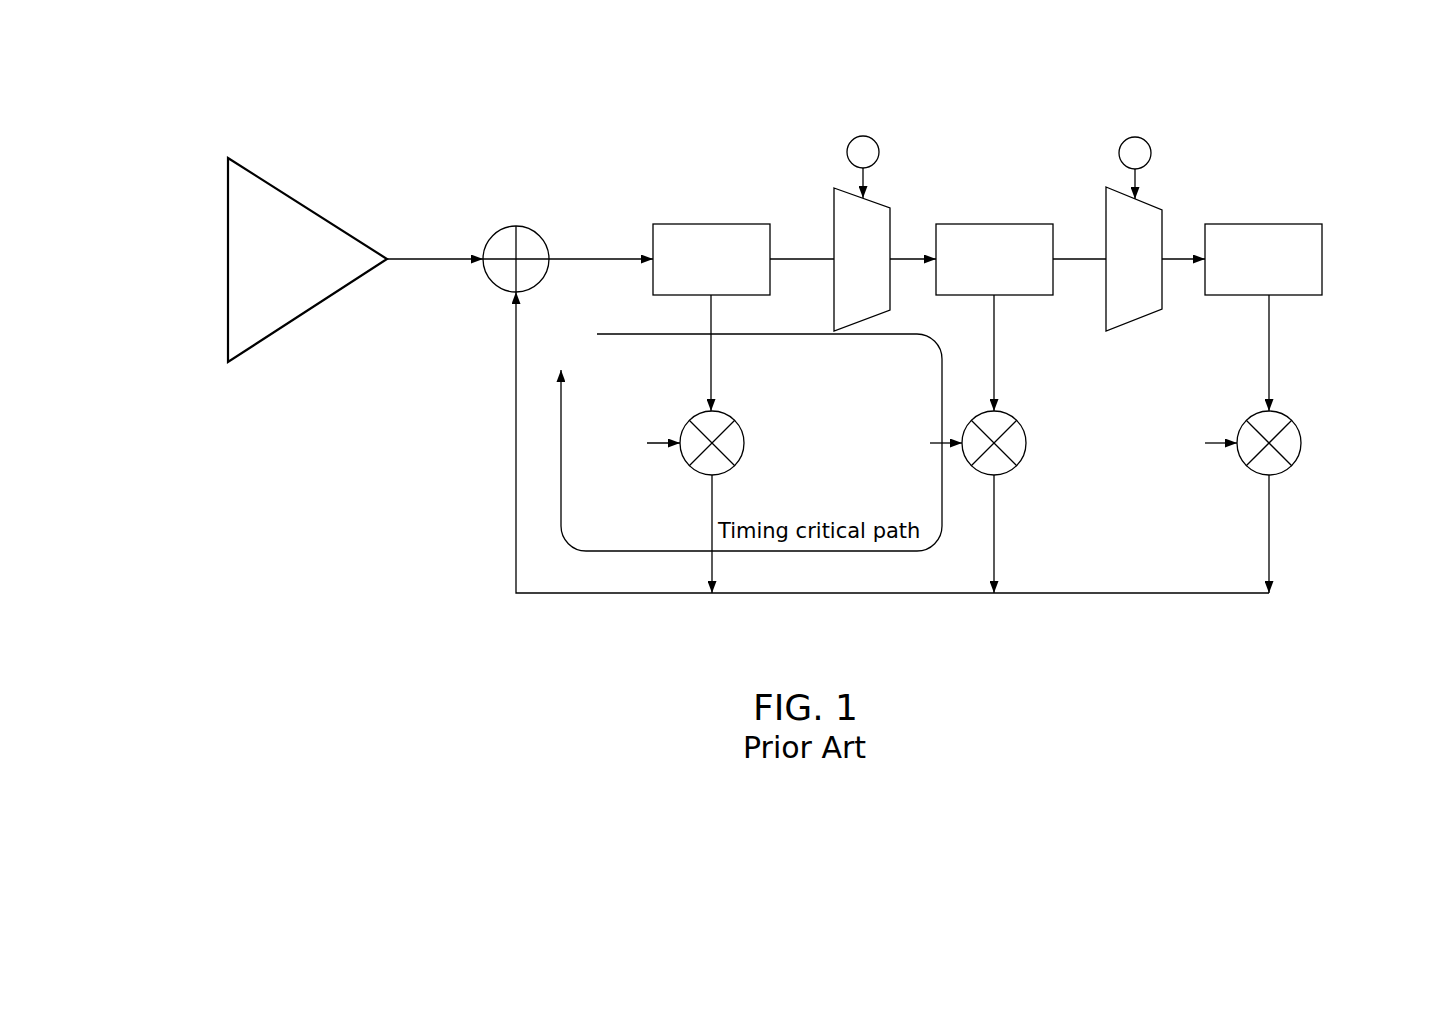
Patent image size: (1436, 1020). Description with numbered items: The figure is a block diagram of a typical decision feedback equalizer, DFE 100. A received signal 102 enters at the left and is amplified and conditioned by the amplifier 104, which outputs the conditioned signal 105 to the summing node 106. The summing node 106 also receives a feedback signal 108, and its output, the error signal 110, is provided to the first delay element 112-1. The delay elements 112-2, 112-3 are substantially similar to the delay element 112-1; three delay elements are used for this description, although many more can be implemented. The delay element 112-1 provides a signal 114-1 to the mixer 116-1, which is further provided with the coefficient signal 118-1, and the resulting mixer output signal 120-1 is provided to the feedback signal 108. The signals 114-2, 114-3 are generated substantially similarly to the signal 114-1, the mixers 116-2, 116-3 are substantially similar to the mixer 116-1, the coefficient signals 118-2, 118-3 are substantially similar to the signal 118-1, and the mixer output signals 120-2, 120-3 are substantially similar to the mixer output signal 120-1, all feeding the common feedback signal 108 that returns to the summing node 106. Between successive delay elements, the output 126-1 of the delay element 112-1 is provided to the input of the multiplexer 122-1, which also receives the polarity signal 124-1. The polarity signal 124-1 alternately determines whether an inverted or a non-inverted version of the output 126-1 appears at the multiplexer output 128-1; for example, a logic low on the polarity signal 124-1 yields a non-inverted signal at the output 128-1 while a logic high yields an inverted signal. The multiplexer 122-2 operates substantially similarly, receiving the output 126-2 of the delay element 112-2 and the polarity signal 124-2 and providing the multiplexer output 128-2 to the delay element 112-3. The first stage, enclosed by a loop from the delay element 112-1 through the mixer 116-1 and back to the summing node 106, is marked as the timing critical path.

The DFE 100 is at (1236, 64).
The received signal 102 is at (226, 257).
The amplifier 104 is at (306, 203).
The conditioned signal 105 is at (410, 257).
The summing node 106 is at (526, 228).
The feedback signal 108 is at (515, 358).
The error signal 110 is at (591, 257).
The delay element 112-1 is at (705, 223).
The delay element 112-2 is at (991, 223).
The delay element 112-3 is at (1266, 223).
The signal 114-1 is at (713, 357).
The signal 114-2 is at (996, 330).
The signal 114-3 is at (1271, 330).
The mixer 116-1 is at (745, 432).
The mixer 116-2 is at (1027, 432).
The mixer 116-3 is at (1302, 432).
The signal C1 118-1 is at (661, 447).
The signal C2 118-2 is at (937, 448).
The signal C3 118-3 is at (1218, 447).
The mixer output signal 120-1 is at (714, 493).
The mixer output signal 120-2 is at (996, 500).
The mixer output signal 120-3 is at (1271, 500).
The multiplexer 122-1 is at (892, 298).
The multiplexer 122-2 is at (1164, 298).
The polarity signal 124-1 is at (860, 138).
The polarity signal 124-2 is at (1137, 138).
The output 126-1 is at (790, 257).
The output 126-2 is at (1063, 257).
The multiplexer output 128-1 is at (905, 257).
The multiplexer output 128-2 is at (1183, 257).